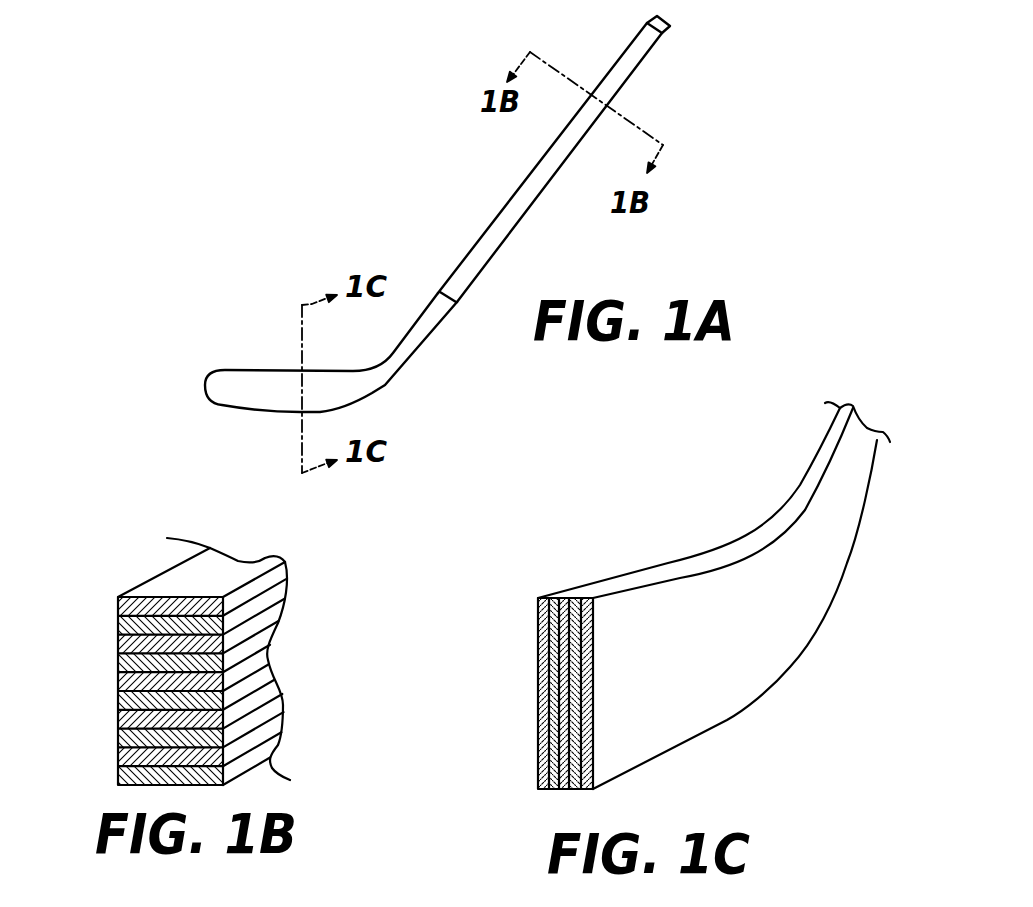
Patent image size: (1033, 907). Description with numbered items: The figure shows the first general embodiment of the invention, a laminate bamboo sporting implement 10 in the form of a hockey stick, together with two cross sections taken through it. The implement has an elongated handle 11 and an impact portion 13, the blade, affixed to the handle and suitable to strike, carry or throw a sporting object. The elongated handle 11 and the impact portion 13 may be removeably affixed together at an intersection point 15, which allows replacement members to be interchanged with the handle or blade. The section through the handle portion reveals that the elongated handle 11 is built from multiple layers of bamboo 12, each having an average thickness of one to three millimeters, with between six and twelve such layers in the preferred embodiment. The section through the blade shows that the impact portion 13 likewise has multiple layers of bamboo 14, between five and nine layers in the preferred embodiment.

In FIG. 1A, the laminate bamboo sporting implement 10 is at (446, 178).
In FIG. 1A, the elongated handle 11 is at (622, 70).
In FIG. 1B, the elongated handle 11 is at (210, 577).
In FIG. 1B, the layers of bamboo 12 is at (88, 597).
In FIG. 1A, the impact portion 13 is at (262, 390).
In FIG. 1C, the impact portion 13 is at (698, 588).
In FIG. 1C, the layers of bamboo 14 is at (512, 597).
In FIG. 1A, the intersection point 15 is at (440, 296).